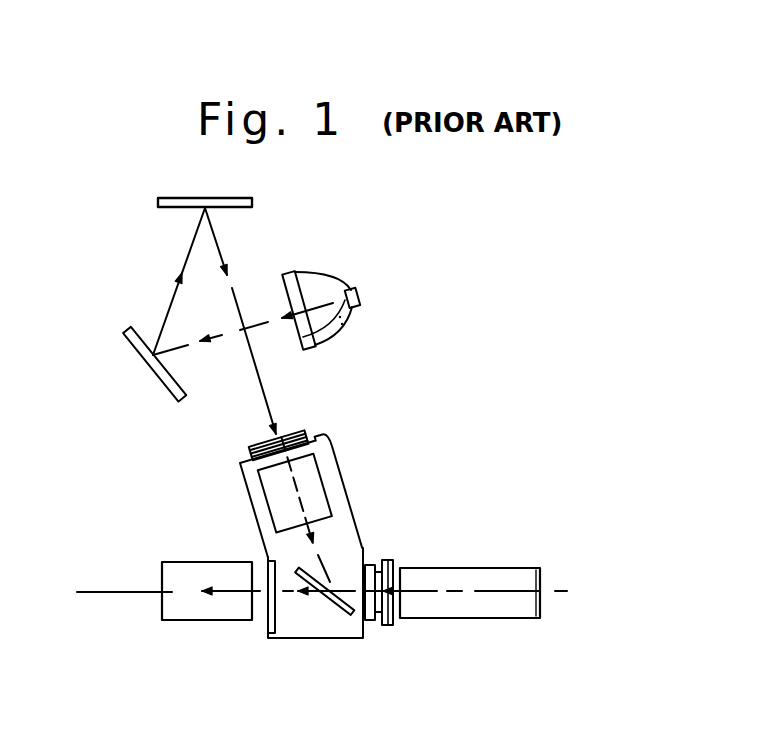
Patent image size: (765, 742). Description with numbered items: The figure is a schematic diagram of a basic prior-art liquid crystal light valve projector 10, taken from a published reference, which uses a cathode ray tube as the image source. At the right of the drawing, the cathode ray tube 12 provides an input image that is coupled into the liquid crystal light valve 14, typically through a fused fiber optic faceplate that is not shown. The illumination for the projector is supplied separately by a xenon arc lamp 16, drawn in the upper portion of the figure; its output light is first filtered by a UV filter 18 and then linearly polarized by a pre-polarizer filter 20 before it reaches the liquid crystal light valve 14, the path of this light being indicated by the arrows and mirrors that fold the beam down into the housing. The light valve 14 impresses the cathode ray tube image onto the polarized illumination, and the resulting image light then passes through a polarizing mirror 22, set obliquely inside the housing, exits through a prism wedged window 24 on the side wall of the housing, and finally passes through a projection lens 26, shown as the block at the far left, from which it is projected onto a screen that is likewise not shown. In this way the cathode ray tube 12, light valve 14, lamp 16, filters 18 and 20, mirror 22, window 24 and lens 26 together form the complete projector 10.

The LCLV projector 10 is at (446, 296).
The cathode ray tube 12 is at (483, 568).
The liquid crystal light valve 14 is at (393, 562).
The xenon arc lamp 16 is at (342, 328).
The UV filter 18 is at (314, 421).
The pre-polarizer filter 20 is at (345, 500).
The polarizing mirror 22 is at (340, 616).
The prism wedged window 24 is at (268, 625).
The projection lens 26 is at (230, 561).